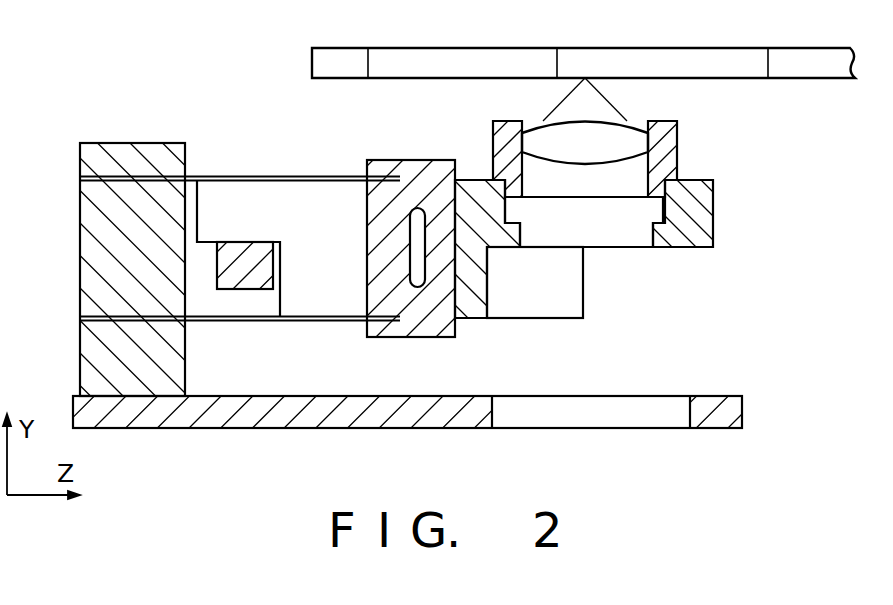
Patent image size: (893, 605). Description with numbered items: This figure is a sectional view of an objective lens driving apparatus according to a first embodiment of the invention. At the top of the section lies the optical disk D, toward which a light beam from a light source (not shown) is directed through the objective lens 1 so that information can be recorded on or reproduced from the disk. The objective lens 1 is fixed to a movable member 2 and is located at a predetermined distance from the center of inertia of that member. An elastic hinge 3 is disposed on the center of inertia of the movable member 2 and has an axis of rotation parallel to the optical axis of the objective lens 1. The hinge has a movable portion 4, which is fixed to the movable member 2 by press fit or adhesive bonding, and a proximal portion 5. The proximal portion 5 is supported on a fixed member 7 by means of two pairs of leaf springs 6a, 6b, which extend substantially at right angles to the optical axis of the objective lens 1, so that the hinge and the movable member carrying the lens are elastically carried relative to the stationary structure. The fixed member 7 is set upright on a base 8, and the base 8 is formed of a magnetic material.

The optical disk D is at (790, 65).
The objective lens 1 is at (665, 158).
The movable member 2 is at (693, 228).
The elastic hinge 3 is at (392, 272).
The movable portion 4 is at (456, 335).
The proximal portion 5 is at (410, 313).
The leaf springs 6a is at (290, 176).
The leaf springs 6b is at (290, 320).
The fixed member 7 is at (97, 218).
The base 8 is at (690, 400).